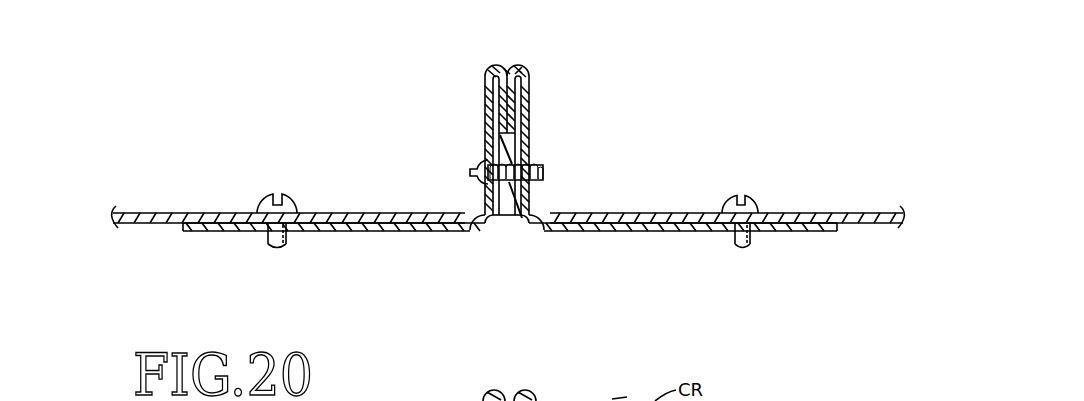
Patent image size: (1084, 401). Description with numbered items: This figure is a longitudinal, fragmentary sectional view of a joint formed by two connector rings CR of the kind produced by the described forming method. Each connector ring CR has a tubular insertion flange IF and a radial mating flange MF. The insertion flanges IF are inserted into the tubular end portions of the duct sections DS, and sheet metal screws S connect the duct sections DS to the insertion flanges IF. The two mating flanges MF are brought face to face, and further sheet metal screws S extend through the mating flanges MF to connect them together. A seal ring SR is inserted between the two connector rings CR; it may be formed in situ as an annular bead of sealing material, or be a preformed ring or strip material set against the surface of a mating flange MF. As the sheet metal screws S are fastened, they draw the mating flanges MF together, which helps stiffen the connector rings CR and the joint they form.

The duct section DS is at (198, 213).
The sheet metal screw S is at (266, 200).
The connector ring CR is at (463, 105).
The mating flange MF is at (487, 140).
The insertion flange IF is at (362, 232).
The seal ring SR is at (507, 215).